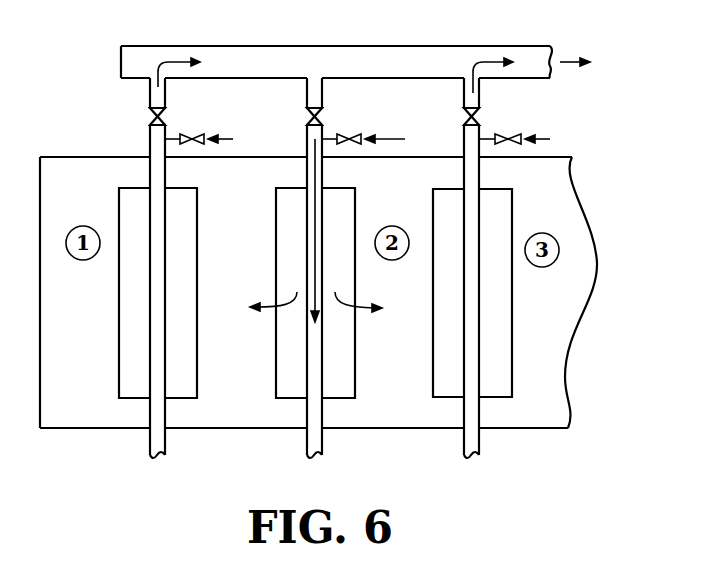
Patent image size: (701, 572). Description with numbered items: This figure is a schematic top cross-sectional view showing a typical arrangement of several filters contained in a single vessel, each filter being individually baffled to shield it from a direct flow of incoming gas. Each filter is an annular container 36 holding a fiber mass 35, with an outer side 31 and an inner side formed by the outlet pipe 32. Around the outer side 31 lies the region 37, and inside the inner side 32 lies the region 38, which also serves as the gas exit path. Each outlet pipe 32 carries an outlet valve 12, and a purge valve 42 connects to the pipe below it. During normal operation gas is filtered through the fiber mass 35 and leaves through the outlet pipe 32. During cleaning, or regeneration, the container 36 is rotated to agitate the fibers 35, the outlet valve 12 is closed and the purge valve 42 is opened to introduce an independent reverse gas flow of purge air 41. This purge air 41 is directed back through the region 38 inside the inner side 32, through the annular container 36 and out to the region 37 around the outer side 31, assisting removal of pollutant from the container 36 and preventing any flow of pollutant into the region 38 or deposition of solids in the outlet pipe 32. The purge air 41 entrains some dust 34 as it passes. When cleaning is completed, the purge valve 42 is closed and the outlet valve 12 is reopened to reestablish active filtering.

The outlet valve 12 is at (151, 119).
The outer side 31 is at (119, 342).
The outlet pipe 32 is at (307, 240).
The dust 34 is at (161, 64).
The fiber mass 35 is at (185, 216).
The container 36 is at (108, 208).
The region around the outer side 37 is at (243, 389).
The region inside the inner side 38 is at (315, 408).
The purge air 41 is at (273, 302).
The purge valve 42 is at (190, 135).